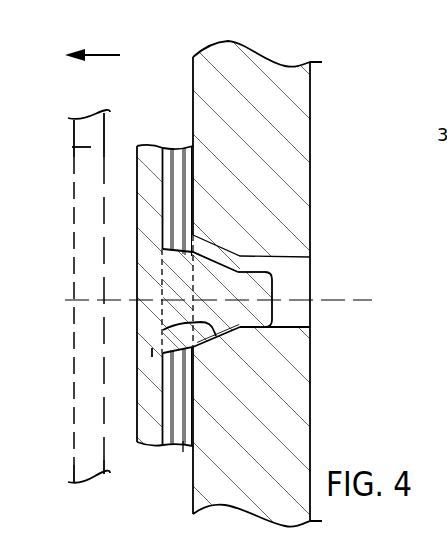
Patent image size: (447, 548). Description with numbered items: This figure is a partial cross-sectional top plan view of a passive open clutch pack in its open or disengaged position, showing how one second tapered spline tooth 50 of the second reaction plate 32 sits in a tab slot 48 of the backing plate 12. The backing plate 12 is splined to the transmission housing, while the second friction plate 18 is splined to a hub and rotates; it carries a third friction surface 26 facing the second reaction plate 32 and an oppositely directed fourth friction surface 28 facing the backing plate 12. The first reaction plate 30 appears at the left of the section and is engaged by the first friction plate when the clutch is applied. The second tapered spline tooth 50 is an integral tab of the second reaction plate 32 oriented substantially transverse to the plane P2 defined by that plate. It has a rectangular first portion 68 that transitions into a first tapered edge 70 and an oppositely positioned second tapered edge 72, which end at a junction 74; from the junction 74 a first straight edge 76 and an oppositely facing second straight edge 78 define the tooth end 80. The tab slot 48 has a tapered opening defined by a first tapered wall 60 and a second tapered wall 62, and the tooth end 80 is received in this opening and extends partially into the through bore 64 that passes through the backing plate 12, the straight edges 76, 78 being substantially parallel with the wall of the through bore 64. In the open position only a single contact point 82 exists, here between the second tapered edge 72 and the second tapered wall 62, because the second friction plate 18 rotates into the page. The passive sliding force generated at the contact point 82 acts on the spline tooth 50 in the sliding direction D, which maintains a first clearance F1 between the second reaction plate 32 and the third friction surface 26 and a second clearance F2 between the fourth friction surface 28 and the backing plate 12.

The backing plate 12 is at (304, 80).
The second friction plate 18 is at (183, 452).
The third friction surface 26 is at (163, 193).
The fourth friction surface 28 is at (193, 158).
The first reaction plate 30 is at (72, 147).
The second reaction plate 32 is at (145, 156).
The tab slot 48 is at (286, 107).
The second tapered spline tooth 50 is at (155, 320).
The first tapered wall 60 is at (235, 311).
The second tapered wall 62 is at (210, 336).
The through bore 64 is at (299, 323).
The rectangular first portion 68 is at (152, 352).
The first tapered edge 70 is at (221, 255).
The second tapered edge 72 is at (233, 329).
The junction 74 is at (263, 263).
The first straight edge 76 is at (270, 263).
The second straight edge 78 is at (259, 323).
The tooth end 80 is at (263, 285).
The contact point 82 is at (163, 330).
The sliding direction D is at (92, 45).
The first clearance F1 is at (166, 139).
The second clearance F2 is at (187, 138).
The plane P2 is at (166, 436).